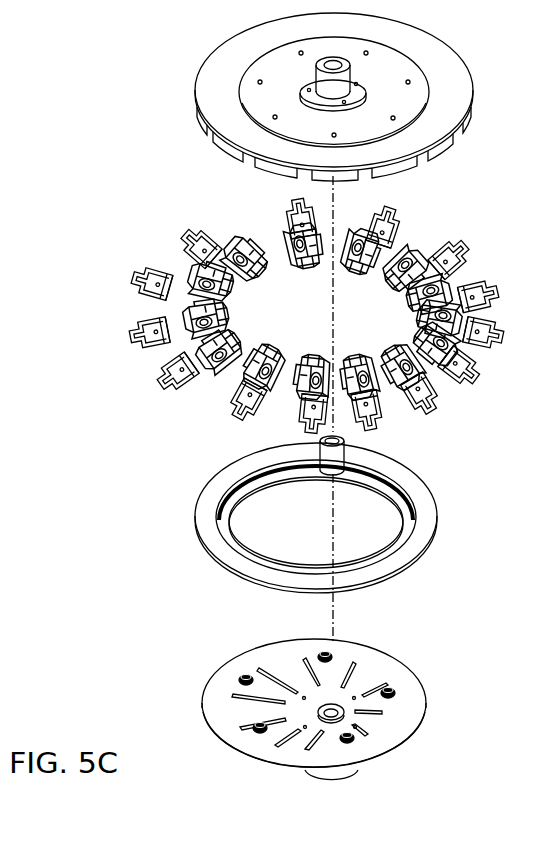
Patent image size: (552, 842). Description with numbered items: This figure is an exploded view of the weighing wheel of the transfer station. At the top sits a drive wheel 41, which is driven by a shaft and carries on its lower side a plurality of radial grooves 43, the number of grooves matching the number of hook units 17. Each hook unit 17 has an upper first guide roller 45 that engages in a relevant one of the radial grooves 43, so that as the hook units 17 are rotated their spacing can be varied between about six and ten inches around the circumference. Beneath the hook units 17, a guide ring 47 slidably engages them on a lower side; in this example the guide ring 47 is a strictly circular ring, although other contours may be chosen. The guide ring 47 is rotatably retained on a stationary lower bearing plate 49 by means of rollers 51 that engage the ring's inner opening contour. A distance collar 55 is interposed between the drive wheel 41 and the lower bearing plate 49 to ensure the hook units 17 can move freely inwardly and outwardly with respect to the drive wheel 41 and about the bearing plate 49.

The drive wheel 41 is at (455, 100).
The radial grooves 43 is at (206, 133).
The upper first guide roller 45 is at (208, 268).
The hook unit 17 is at (147, 335).
The guide ring 47 is at (418, 519).
The distance collar 55 is at (328, 458).
The lower bearing plate 49 is at (418, 700).
The rollers 51 is at (322, 655).